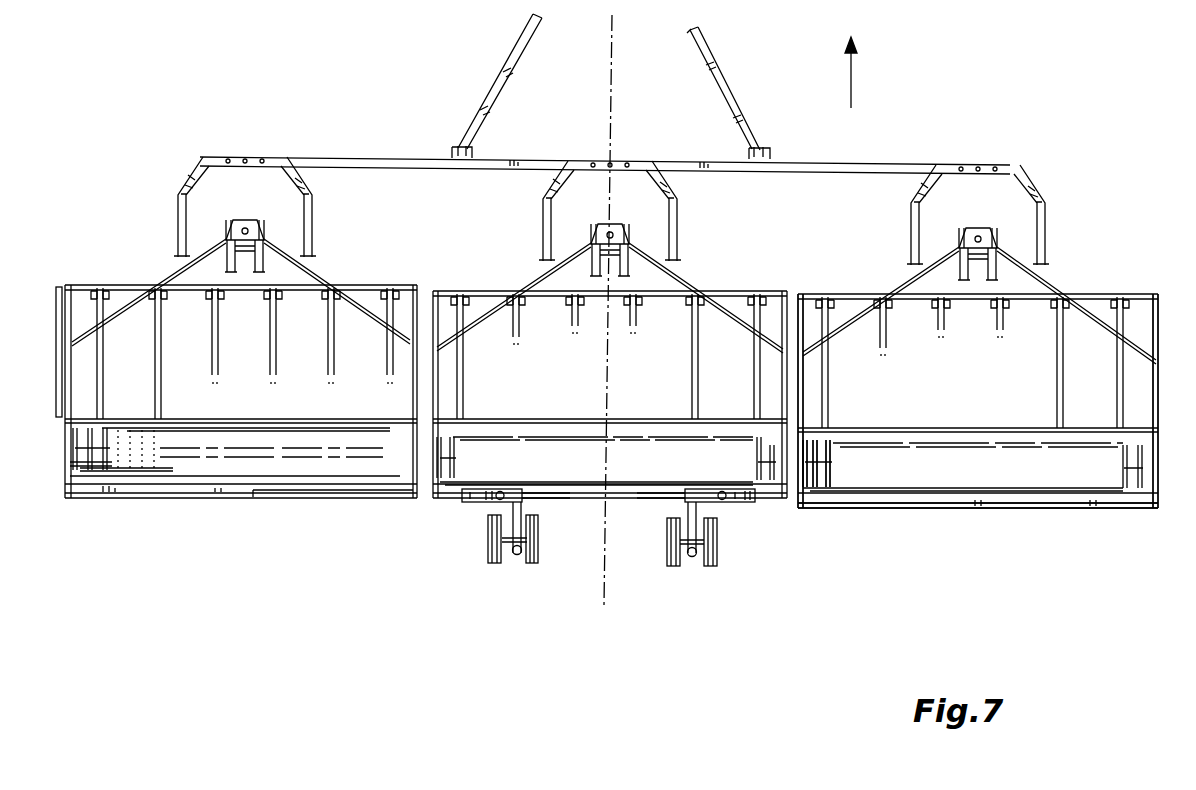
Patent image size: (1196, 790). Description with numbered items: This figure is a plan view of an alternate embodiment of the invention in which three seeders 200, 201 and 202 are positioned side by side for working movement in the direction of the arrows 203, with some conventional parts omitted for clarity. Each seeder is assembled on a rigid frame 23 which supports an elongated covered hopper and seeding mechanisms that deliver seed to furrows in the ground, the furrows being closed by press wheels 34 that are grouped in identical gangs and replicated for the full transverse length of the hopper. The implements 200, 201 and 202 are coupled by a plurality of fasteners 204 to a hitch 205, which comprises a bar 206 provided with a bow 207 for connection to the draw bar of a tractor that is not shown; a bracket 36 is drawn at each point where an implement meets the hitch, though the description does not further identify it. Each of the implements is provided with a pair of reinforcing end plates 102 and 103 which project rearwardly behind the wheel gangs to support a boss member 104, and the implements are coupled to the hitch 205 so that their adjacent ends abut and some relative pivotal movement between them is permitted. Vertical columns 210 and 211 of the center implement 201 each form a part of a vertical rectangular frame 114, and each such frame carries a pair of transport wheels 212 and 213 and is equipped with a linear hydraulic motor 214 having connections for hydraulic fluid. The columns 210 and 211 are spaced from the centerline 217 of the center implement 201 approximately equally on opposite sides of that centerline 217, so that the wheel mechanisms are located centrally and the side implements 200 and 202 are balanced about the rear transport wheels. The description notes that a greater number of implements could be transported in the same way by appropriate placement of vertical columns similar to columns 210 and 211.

The seeder 200 is at (118, 271).
The center implement 201 is at (491, 263).
The seeder 202 is at (855, 273).
The arrows 203 is at (853, 92).
The fasteners 204 is at (1003, 165).
The hitch 205 is at (779, 148).
The bar 206 is at (338, 156).
The bow 207 is at (503, 72).
The hinge bracket 36 is at (244, 213).
The rigid frame 23 is at (357, 264).
The reinforcing end plate 102 is at (802, 387).
The reinforcing end plate 103 is at (1155, 386).
The boss member 104 is at (1113, 508).
The press wheel 34 is at (840, 467).
The vertical rectangular frame 114 is at (609, 540).
The vertical column 210 is at (530, 490).
The vertical column 211 is at (696, 490).
The transport wheel 212 is at (673, 566).
The transport wheel 213 is at (705, 568).
The linear hydraulic motor 214 is at (693, 558).
The centerline 217 is at (603, 601).